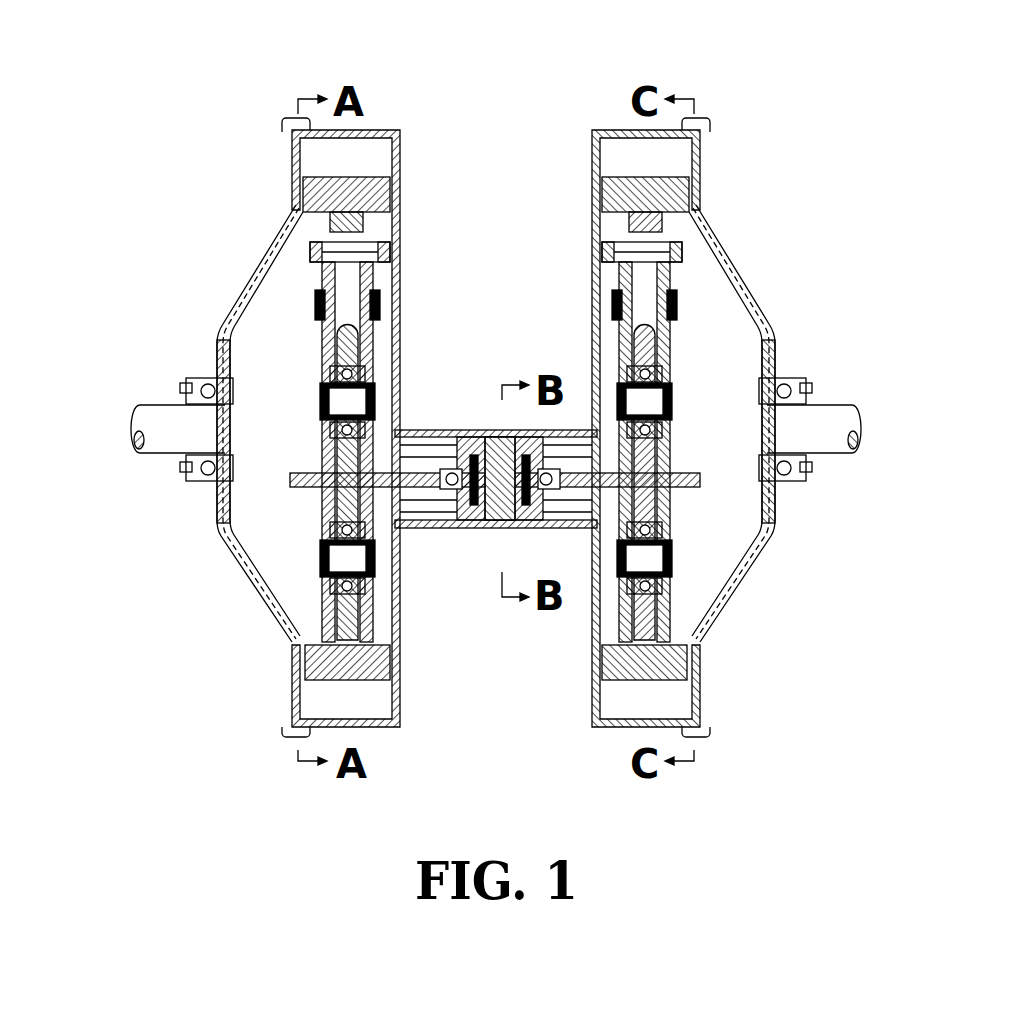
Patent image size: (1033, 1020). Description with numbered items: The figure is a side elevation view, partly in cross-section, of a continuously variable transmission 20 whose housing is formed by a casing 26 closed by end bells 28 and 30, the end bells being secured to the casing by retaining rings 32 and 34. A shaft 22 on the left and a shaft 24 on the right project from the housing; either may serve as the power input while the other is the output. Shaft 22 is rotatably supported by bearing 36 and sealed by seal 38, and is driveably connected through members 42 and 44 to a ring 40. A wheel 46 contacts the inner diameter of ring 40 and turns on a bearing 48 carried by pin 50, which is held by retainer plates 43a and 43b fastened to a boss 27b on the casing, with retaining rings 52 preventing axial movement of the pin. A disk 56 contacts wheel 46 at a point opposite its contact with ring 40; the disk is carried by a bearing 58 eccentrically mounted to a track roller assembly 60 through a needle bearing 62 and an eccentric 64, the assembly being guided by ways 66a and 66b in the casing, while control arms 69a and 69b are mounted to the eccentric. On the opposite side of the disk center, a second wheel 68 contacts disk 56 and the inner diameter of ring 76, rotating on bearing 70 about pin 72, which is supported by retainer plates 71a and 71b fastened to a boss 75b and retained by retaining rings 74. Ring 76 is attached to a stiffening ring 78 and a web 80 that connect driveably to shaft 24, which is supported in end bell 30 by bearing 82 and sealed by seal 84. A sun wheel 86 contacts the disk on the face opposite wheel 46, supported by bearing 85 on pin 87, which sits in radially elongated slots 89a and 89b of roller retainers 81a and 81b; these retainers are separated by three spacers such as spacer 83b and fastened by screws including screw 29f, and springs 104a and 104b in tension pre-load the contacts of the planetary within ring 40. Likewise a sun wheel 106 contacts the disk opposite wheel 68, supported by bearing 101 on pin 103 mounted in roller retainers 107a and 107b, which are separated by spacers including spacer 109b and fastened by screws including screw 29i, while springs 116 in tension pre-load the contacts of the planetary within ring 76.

The continuously variable transmission 20 is at (406, 136).
The shaft 22 is at (152, 404).
The shaft 24 is at (850, 403).
The casing 26 is at (388, 724).
The boss 27b is at (373, 580).
The end bell 28 is at (292, 160).
The screw 29f is at (403, 150).
The screw 29i is at (596, 176).
The end bell 30 is at (702, 165).
The retaining ring 32 is at (284, 128).
The retaining ring 34 is at (706, 130).
The bearing 36 is at (212, 478).
The seal 38 is at (185, 455).
The ring 40 is at (290, 736).
The member 42 is at (322, 580).
The retainer plate 43a is at (320, 522).
The retainer plate 43b is at (372, 645).
The member 44 is at (393, 725).
The wheel 46 is at (264, 617).
The bearing 48 is at (243, 597).
The pin 50 is at (320, 538).
The retaining rings 52 is at (320, 566).
The disk 56 is at (430, 432).
The bearing 58 is at (462, 470).
The track roller assembly 60 is at (530, 437).
The needle bearing 62 is at (478, 505).
The eccentric 64 is at (500, 437).
The way 66a is at (578, 528).
The way 66b is at (405, 432).
The wheel 68 is at (655, 612).
The control arm 69a is at (530, 485).
The control arm 69b is at (465, 505).
The bearing 70 is at (672, 586).
The retainer plate 71a is at (677, 530).
The retainer plate 71b is at (625, 600).
The pin 72 is at (665, 553).
The retaining rings 74 is at (672, 540).
The boss 75b is at (622, 578).
The ring 76 is at (640, 650).
The stiffening ring 78 is at (642, 690).
The web 80 is at (690, 325).
The roller retainer 81a is at (312, 244).
The roller retainer 81b is at (300, 178).
The bearing 82 is at (793, 378).
The spacer 83b is at (302, 208).
The seal 84 is at (815, 380).
The bearing 85 is at (315, 305).
The sun wheel 86 is at (322, 330).
The pin 87 is at (337, 345).
The slot 89a is at (322, 386).
The slot 89b is at (378, 396).
The bearing 101 is at (690, 360).
The pin 103 is at (770, 326).
The spring 104a is at (310, 262).
The spring 104b is at (374, 248).
The sun wheel 106 is at (690, 350).
The roller retainer 107a is at (670, 262).
The roller retainer 107b is at (628, 250).
The spacer 109b is at (622, 192).
The spring 116 is at (602, 270).